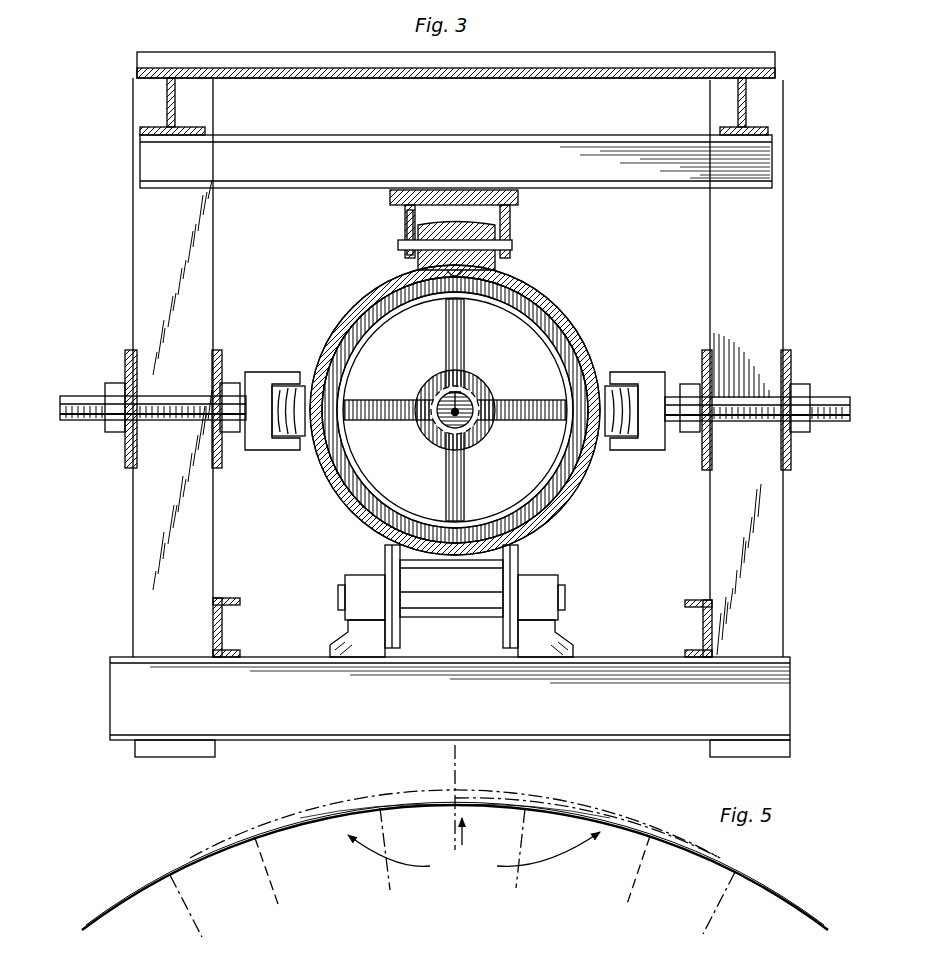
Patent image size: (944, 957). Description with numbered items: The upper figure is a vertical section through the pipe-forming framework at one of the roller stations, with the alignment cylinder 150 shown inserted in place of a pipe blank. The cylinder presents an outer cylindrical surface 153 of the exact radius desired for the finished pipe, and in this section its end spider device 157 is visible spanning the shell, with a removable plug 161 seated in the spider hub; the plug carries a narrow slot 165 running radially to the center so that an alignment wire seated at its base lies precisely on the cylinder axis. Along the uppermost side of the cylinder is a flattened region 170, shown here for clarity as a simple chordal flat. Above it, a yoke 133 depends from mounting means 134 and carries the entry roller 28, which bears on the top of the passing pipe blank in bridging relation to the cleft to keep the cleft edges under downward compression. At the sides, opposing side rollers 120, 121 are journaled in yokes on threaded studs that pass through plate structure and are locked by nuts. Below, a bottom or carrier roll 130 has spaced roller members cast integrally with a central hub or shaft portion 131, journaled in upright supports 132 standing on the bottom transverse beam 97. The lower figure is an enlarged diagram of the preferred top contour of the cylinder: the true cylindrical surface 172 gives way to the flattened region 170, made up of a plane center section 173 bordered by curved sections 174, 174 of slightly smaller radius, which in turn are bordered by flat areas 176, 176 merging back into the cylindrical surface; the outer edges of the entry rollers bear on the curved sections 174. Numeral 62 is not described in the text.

In FIG. 3, the entry roller 28 is at (478, 228).
In FIG. 5, the center line 62 is at (452, 757).
In FIG. 3, the bottom transverse beam 97 is at (622, 660).
In FIG. 3, the side roller 120 is at (278, 356).
In FIG. 3, the side roller 121 is at (600, 446).
In FIG. 3, the bottom or carrier roll 130 is at (385, 565).
In FIG. 3, the central hub or shaft portion 131 is at (446, 612).
In FIG. 3, the upright support 132 is at (358, 576).
In FIG. 3, the yoke 133 is at (407, 222).
In FIG. 3, the mounting means 134 is at (390, 195).
In FIG. 3, the alignment cylinder 150 is at (479, 402).
In FIG. 3, the outer cylindrical surface 153 is at (555, 302).
In FIG. 5, the outer cylindrical surface 153 is at (117, 902).
In FIG. 3, the end spider device 157 is at (446, 345).
In FIG. 3, the removable plug 161 is at (462, 418).
In FIG. 3, the narrow slot 165 is at (468, 394).
In FIG. 3, the flattened region 170 is at (460, 278).
In FIG. 5, the flattened region 170 is at (474, 847).
In FIG. 5, the true cylindrical surface 172 is at (414, 797).
In FIG. 5, the plane center section 173 is at (485, 805).
In FIG. 5, the curved section 174 is at (330, 792).
In FIG. 5, the flat or plane area 176 is at (222, 848).